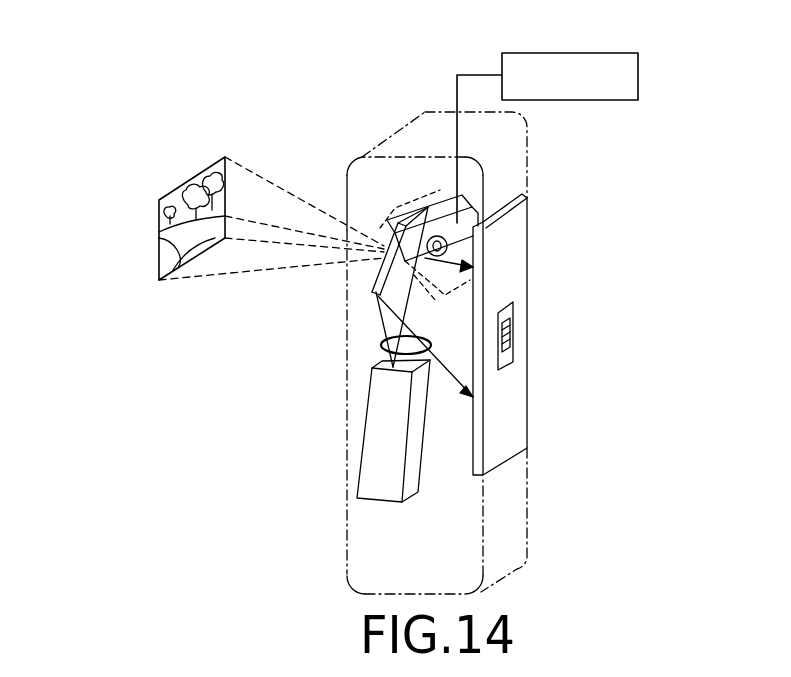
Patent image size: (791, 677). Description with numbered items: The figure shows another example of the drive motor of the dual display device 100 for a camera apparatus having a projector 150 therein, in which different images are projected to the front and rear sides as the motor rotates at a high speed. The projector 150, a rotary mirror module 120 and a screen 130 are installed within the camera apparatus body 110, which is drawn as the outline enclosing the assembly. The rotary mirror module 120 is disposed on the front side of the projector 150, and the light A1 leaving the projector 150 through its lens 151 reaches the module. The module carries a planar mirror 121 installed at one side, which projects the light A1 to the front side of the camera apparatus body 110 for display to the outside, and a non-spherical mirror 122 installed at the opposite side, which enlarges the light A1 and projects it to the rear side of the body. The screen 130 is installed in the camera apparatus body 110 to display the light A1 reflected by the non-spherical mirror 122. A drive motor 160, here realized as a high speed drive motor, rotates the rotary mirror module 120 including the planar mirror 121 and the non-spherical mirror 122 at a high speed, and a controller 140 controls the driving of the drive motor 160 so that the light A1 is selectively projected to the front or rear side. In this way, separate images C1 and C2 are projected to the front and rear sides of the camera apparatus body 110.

The dual display device 100 is at (309, 37).
The camera apparatus body 110 is at (347, 534).
The rotary mirror module 120 is at (242, 87).
The planar mirror 121 is at (388, 232).
The non-spherical mirror 122 is at (412, 212).
The screen 130 is at (503, 388).
The controller 140 is at (638, 77).
The projector 150 is at (376, 430).
The lens 151 is at (380, 345).
The drive motor 160 is at (438, 234).
The image C1 is at (160, 240).
The image C2 is at (513, 330).
The light A1 is at (405, 308).